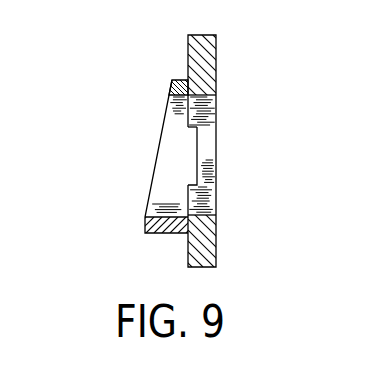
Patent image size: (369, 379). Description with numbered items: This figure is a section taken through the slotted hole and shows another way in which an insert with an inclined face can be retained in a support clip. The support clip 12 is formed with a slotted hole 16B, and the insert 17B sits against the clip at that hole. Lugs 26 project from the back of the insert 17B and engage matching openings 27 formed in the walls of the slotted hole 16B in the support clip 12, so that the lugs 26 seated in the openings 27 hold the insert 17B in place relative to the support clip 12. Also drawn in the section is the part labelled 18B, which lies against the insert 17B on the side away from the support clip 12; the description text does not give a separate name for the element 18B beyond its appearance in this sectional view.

The support clip 12 is at (208, 53).
The slotted hole 16B is at (203, 117).
The insert 17B is at (176, 85).
The wedge member 18B is at (163, 149).
The lugs 26 is at (198, 151).
The openings 27 is at (203, 161).